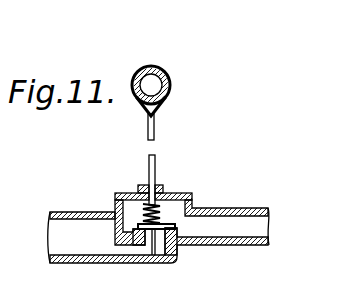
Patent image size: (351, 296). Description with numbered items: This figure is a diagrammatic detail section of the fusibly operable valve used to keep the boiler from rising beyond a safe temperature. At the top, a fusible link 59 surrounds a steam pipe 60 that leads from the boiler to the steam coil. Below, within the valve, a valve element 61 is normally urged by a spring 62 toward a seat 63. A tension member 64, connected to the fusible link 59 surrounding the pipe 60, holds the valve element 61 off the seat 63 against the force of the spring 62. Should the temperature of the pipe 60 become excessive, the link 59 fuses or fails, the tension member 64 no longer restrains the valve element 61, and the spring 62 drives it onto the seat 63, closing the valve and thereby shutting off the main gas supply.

The fusible link 59 is at (163, 105).
The steam pipe 60 is at (172, 86).
The valve element 61 is at (156, 250).
The spring 62 is at (157, 212).
The seat 63 is at (137, 232).
The tension member 64 is at (156, 157).